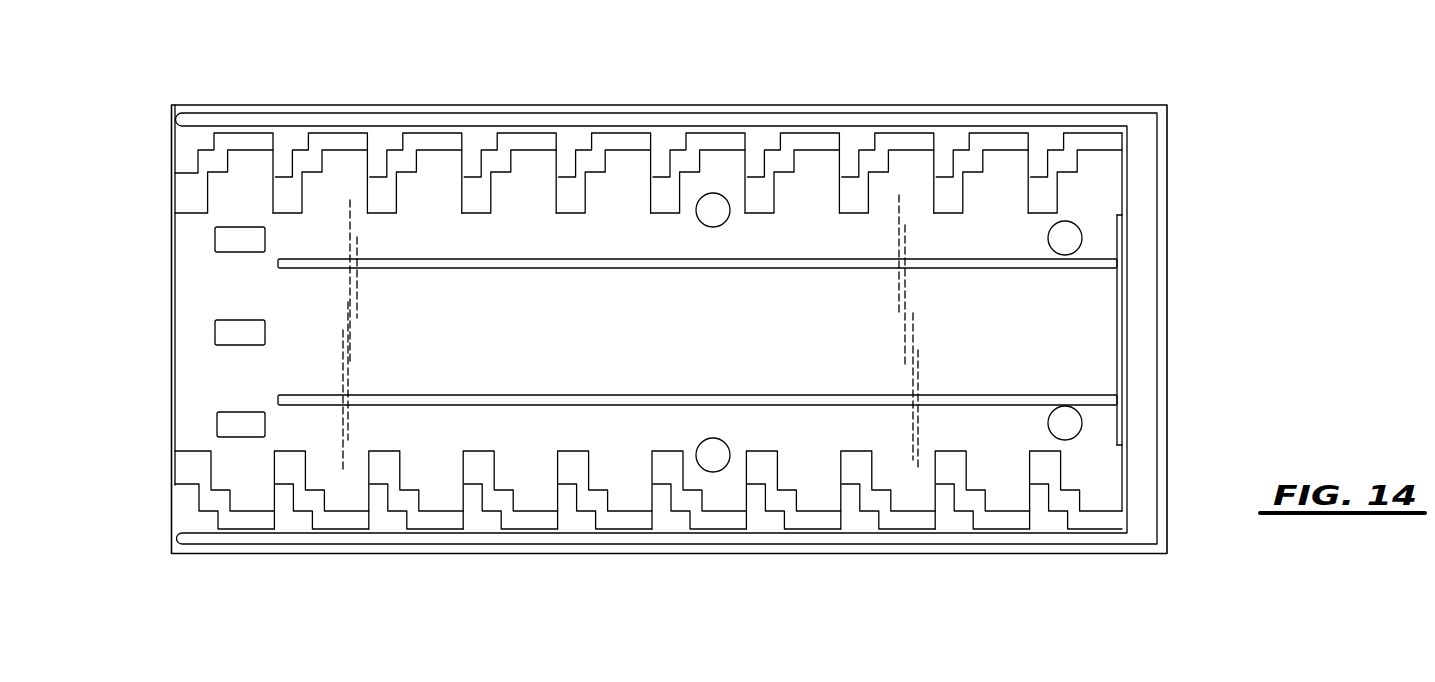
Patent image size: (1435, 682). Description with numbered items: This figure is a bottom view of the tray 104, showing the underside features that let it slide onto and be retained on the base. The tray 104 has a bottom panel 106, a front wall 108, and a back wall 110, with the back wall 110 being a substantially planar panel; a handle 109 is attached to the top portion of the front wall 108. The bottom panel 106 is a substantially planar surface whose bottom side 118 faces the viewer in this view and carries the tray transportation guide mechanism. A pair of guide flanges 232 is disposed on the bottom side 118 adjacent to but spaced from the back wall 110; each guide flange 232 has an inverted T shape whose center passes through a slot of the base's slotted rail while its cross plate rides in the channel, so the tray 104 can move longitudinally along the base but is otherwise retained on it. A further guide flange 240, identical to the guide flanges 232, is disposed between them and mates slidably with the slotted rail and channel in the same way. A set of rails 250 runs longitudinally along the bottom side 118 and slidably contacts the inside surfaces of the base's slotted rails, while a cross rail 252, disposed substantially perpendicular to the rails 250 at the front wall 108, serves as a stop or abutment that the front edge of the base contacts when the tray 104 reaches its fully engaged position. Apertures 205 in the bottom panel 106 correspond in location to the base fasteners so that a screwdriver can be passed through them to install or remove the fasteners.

The tray 104 is at (786, 92).
The bottom panel 106 is at (438, 183).
The front wall 108 is at (1123, 349).
The handle 109 is at (1168, 157).
The back wall 110 is at (172, 148).
The bottom side 118 is at (533, 197).
The apertures 205 is at (714, 193).
The guide flanges 232 is at (225, 233).
The guide flange 240 is at (225, 333).
The rails 250 is at (738, 328).
The cross rail 252 is at (1127, 310).